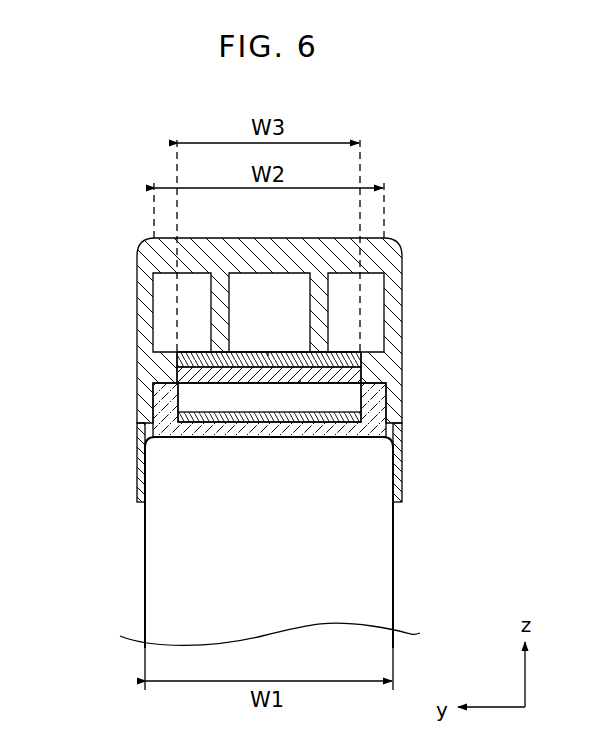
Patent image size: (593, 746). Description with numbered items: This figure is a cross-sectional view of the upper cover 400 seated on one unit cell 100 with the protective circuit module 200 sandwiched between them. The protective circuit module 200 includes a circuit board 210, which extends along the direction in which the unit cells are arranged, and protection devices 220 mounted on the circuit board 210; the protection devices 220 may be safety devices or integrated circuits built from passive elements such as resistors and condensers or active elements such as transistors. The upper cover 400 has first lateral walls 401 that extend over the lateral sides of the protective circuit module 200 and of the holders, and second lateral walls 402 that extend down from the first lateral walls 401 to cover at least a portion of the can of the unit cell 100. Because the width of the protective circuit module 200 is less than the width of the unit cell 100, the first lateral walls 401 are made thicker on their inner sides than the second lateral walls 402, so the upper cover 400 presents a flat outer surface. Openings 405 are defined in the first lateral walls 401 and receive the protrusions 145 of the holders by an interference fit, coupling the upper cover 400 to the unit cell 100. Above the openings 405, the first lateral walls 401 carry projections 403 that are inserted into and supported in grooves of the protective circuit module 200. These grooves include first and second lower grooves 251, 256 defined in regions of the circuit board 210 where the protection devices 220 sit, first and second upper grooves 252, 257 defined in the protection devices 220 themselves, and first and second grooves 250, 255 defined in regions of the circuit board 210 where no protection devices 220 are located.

The unit cell 100 is at (364, 560).
The protrusion 145 is at (150, 418).
The protective circuit module 200 is at (487, 250).
The circuit board 210 is at (300, 380).
The protection device 220 is at (268, 352).
The first groove 250 is at (53, 337).
The first lower groove 251 is at (190, 377).
The first upper groove 252 is at (172, 354).
The second groove 255 is at (487, 335).
The second lower groove 256 is at (365, 374).
The second upper groove 257 is at (365, 358).
The upper cover 400 is at (420, 236).
The first lateral wall 401 is at (140, 294).
The second lateral wall 402 is at (137, 466).
The projection 403 is at (198, 386).
The opening 405 is at (165, 401).